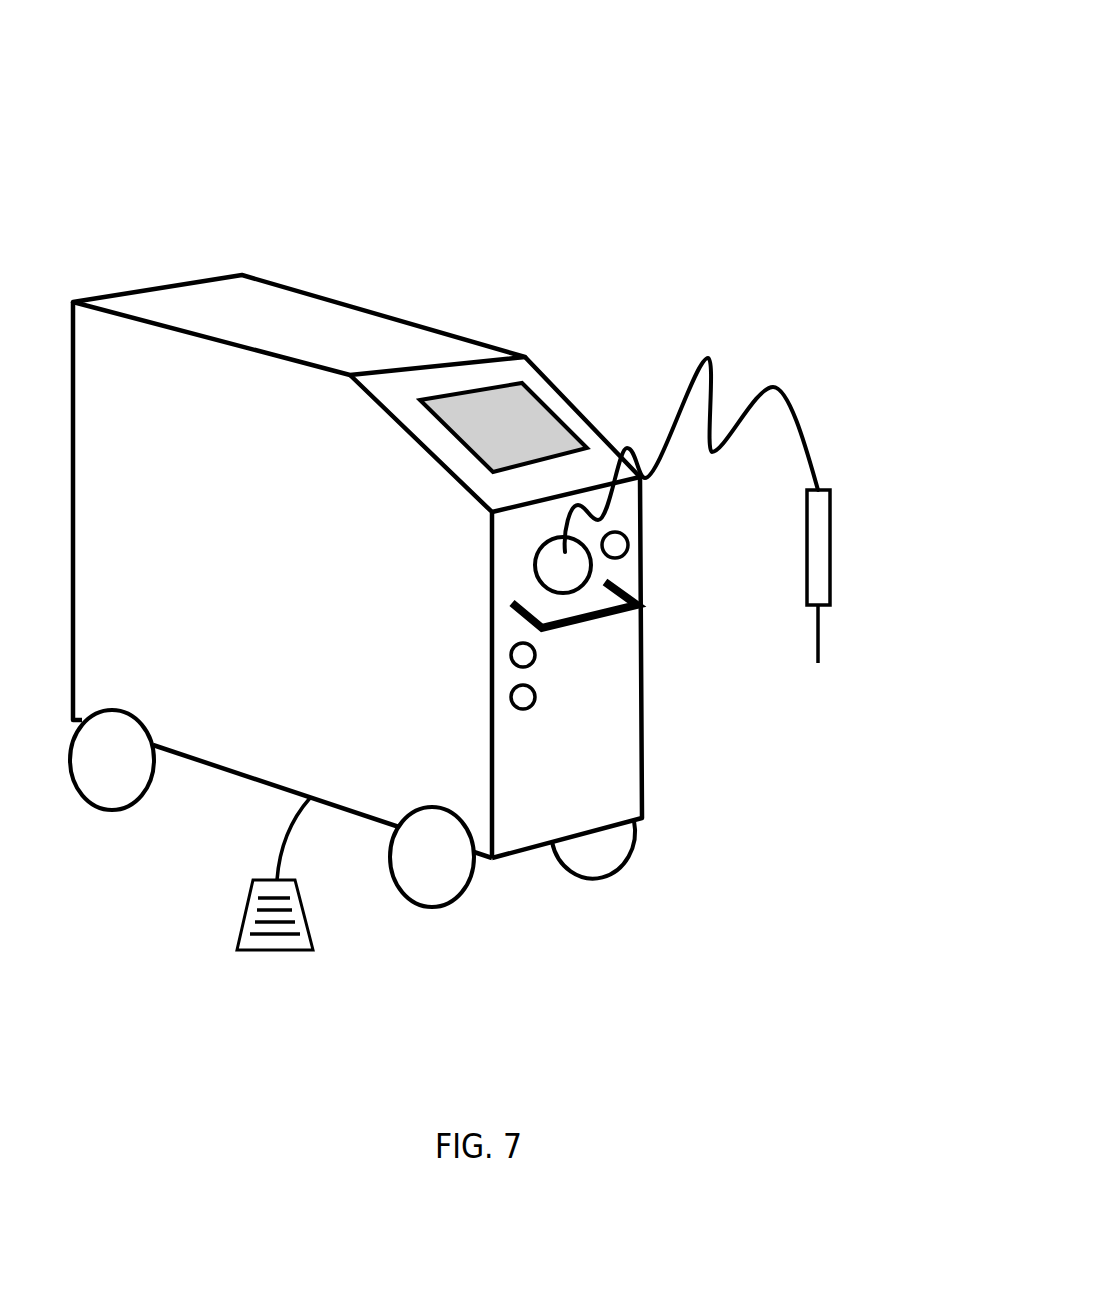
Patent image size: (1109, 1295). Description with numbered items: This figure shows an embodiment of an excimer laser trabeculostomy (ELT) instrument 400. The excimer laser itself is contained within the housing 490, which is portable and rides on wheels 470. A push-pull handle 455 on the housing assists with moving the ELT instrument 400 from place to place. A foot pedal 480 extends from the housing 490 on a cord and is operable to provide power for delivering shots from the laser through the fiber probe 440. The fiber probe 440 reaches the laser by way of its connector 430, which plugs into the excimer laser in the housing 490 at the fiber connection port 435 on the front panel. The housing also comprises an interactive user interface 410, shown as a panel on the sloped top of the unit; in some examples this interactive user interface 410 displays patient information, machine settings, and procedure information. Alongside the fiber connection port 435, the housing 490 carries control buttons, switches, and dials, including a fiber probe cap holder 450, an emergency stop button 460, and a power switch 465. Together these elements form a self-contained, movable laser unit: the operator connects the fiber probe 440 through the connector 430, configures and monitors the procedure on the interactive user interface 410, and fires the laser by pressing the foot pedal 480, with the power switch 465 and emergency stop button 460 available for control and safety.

The excimer laser trabeculostomy (ELT) instrument 400 is at (477, 62).
The housing 490 is at (248, 283).
The interactive user interface 410 is at (480, 425).
The fiber connection port 435 is at (562, 558).
The connector 430 is at (710, 355).
The fiber probe 440 is at (832, 527).
The fiber probe cap holder 450 is at (624, 537).
The push-pull handle 455 is at (637, 596).
The emergency stop button 460 is at (535, 655).
The power switch 465 is at (535, 697).
The wheels 470 is at (463, 893).
The foot pedal 480 is at (235, 952).